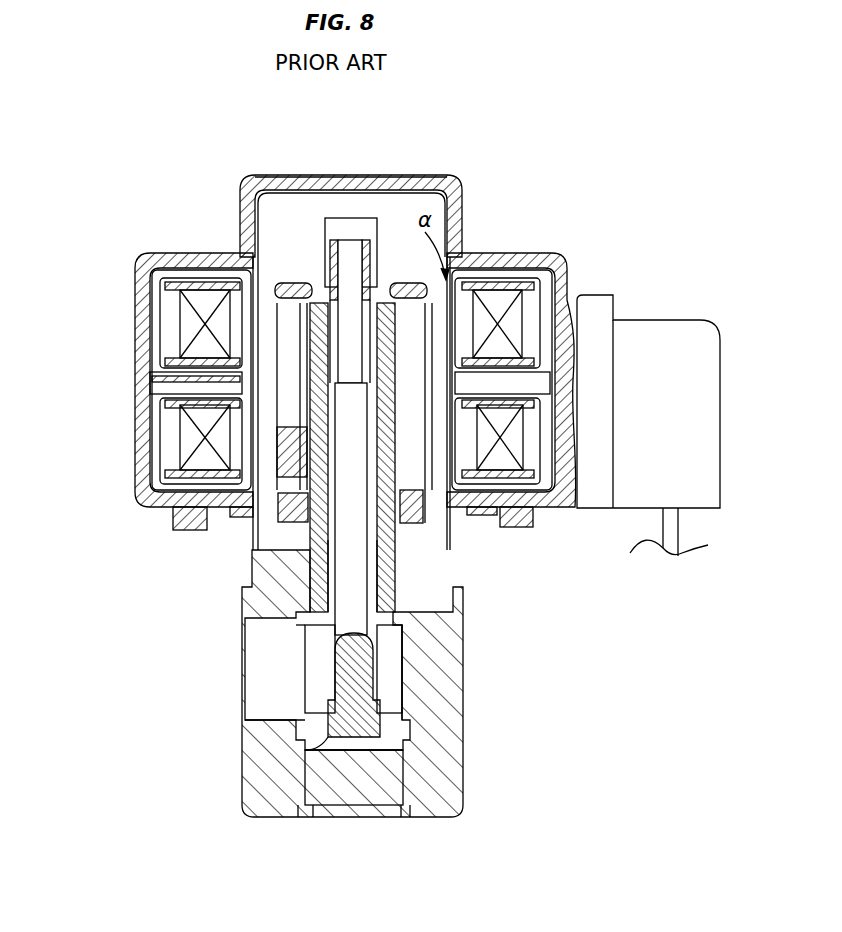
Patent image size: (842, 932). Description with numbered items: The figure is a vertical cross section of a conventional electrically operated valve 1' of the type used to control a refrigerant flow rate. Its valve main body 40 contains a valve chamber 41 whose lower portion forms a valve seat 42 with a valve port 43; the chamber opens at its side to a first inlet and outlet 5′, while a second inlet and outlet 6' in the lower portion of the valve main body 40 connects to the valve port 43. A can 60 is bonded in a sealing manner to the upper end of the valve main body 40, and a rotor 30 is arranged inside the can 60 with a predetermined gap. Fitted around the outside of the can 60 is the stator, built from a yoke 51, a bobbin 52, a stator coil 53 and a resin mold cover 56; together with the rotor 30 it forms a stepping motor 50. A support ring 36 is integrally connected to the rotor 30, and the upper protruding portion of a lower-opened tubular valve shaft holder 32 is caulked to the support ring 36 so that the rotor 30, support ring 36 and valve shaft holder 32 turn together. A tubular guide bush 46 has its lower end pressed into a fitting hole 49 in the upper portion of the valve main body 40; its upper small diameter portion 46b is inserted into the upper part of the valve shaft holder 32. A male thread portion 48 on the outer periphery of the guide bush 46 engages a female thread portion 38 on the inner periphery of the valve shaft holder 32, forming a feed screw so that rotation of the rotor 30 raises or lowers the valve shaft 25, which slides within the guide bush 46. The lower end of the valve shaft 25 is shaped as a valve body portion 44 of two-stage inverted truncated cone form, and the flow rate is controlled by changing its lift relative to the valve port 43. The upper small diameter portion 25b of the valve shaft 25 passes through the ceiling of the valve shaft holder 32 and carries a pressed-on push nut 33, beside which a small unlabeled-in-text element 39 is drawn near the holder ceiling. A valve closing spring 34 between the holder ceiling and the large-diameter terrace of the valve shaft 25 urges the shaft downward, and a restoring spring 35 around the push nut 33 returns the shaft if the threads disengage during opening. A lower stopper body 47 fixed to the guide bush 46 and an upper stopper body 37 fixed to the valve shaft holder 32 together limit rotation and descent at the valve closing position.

The electrically operated valve 1' is at (117, 104).
The upper small diameter portion 25b is at (318, 185).
The restoring spring 35 is at (372, 238).
The push nut 33 is at (385, 238).
The can 60 is at (462, 190).
The rotor 30 is at (470, 265).
The support ring 36 is at (240, 245).
The ring 39 is at (317, 287).
The resin mold cover 56 is at (140, 260).
The yoke 51 is at (172, 266).
The stator coil 53 is at (160, 292).
The valve closing spring 34 is at (265, 310).
The upper small diameter portion 46b is at (297, 358).
The bobbin 52 is at (153, 386).
The female thread portion 38 is at (300, 428).
The male thread portion 48 is at (300, 452).
The stepping motor 50 is at (570, 288).
The valve shaft holder 32 is at (548, 362).
The valve shaft 25 is at (568, 412).
The upper stopper body 37 is at (427, 492).
The lower stopper body 47 is at (428, 530).
The fitting hole 49 is at (323, 565).
The guide bush 46 is at (318, 588).
The valve chamber 41 is at (317, 663).
The valve body portion 44 is at (380, 710).
The first inlet and outlet 5′ is at (277, 718).
The valve port 43 is at (330, 737).
The valve seat 42 is at (463, 747).
The second inlet and outlet 6' is at (354, 828).
The valve main body 40 is at (437, 818).